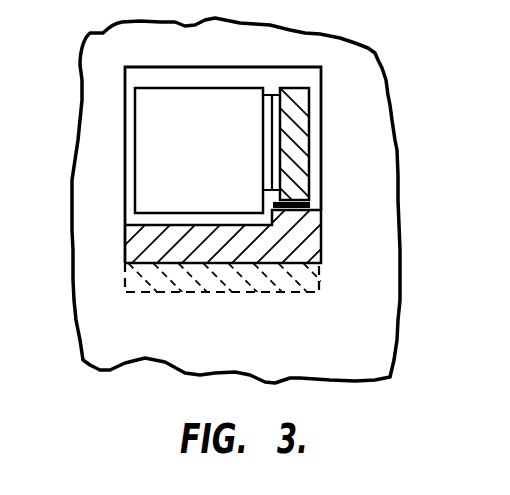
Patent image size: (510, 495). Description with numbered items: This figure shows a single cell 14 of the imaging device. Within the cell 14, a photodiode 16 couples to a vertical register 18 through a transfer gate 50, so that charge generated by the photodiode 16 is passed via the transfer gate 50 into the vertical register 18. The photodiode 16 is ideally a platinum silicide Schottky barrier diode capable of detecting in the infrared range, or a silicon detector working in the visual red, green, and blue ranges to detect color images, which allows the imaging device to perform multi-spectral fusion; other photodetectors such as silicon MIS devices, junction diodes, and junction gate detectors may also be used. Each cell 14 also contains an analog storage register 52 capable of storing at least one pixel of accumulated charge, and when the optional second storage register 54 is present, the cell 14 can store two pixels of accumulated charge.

The cell 14 is at (82, 93).
The photodiode 16 is at (135, 149).
The vertical register 18 is at (311, 118).
The transfer gate 50 is at (272, 92).
The analog storage register 52 is at (322, 244).
The second storage register 54 is at (275, 291).